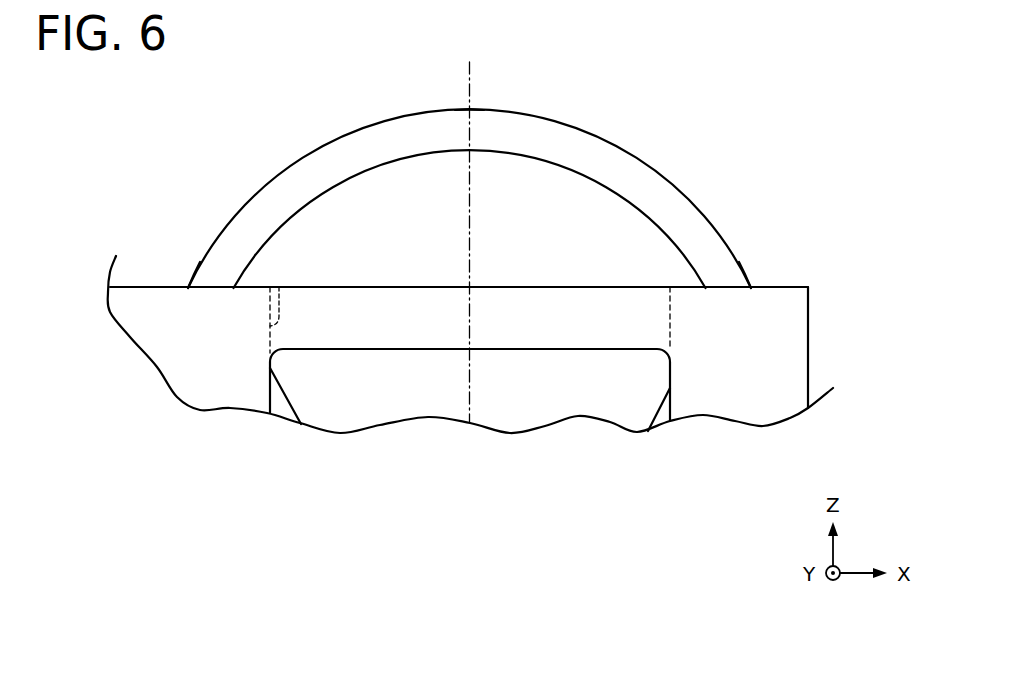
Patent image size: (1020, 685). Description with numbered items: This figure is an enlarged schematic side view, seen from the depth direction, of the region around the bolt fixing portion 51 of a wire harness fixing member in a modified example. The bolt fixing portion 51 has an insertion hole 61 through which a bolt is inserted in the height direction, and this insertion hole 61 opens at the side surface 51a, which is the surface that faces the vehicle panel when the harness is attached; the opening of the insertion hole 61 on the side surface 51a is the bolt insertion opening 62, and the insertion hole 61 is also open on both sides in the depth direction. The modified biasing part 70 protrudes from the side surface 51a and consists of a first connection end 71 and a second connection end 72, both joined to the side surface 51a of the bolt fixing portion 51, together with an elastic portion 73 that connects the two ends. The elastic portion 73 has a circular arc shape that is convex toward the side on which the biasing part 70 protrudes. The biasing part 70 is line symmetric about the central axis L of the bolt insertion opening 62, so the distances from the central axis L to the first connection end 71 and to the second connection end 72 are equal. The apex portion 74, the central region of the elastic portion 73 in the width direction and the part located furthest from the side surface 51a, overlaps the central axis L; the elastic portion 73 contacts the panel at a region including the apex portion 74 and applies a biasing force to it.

The bolt fixing portion 51 is at (470, 346).
The side surface 51a is at (522, 287).
The insertion hole 61 is at (272, 402).
The bolt insertion opening 62 is at (279, 287).
The biasing part 70 is at (470, 172).
The first connection end 71 is at (207, 271).
The second connection end 72 is at (732, 272).
The elastic portion 73 is at (323, 147).
The apex portion 74 is at (469, 110).
The central axis L is at (475, 86).